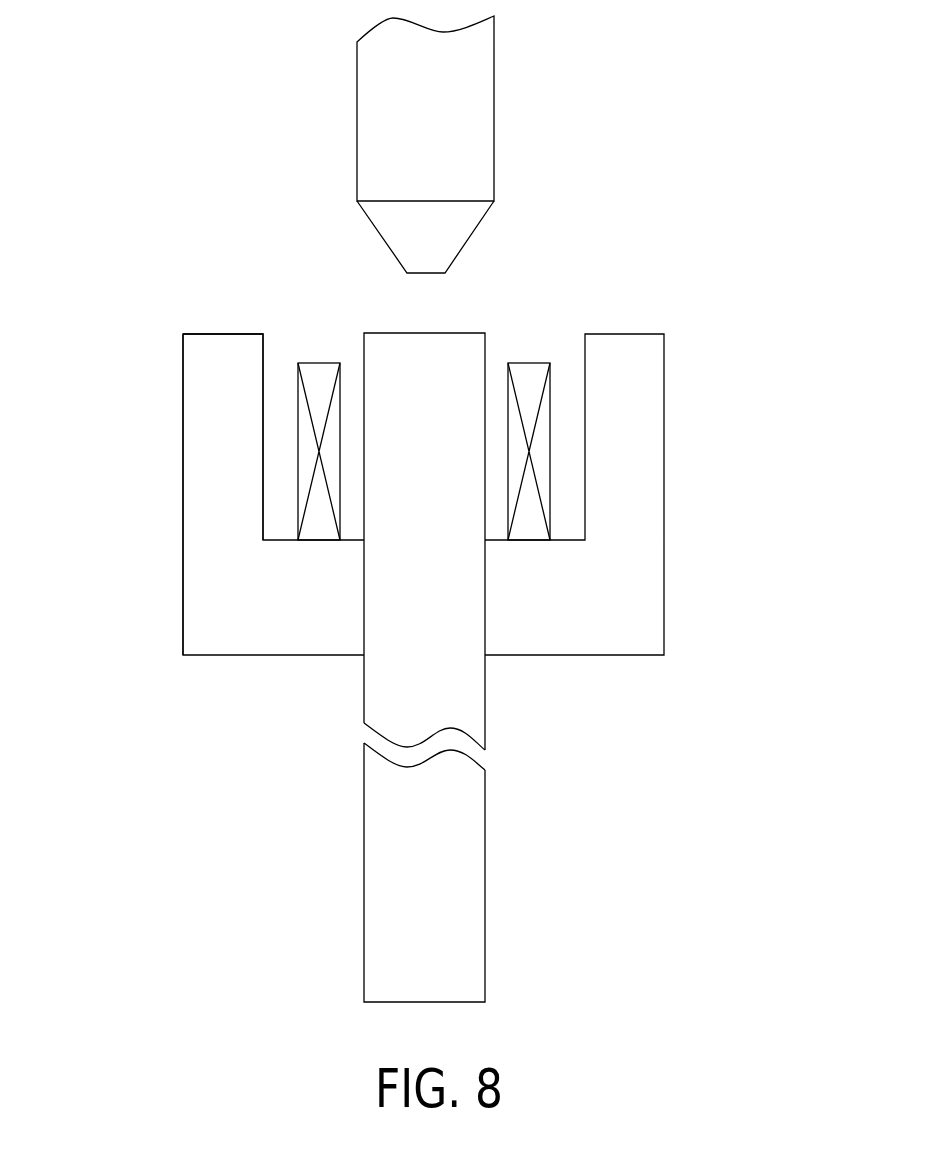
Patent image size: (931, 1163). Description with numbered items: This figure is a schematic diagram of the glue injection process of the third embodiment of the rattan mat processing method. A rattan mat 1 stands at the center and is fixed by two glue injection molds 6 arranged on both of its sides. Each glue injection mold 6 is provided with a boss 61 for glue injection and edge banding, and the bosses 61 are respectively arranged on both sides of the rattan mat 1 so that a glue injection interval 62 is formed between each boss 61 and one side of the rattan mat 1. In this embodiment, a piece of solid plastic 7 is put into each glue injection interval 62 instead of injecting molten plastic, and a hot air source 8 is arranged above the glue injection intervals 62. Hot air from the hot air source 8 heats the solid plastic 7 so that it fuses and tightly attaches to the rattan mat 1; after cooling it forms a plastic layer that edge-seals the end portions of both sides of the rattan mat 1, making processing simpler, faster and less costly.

The rattan mat 1 is at (485, 885).
The glue injection mold 6 is at (273, 655).
The boss 61 is at (183, 388).
The glue injection interval 62 is at (278, 375).
The solid plastic 7 is at (532, 360).
The hot air source 8 is at (494, 108).